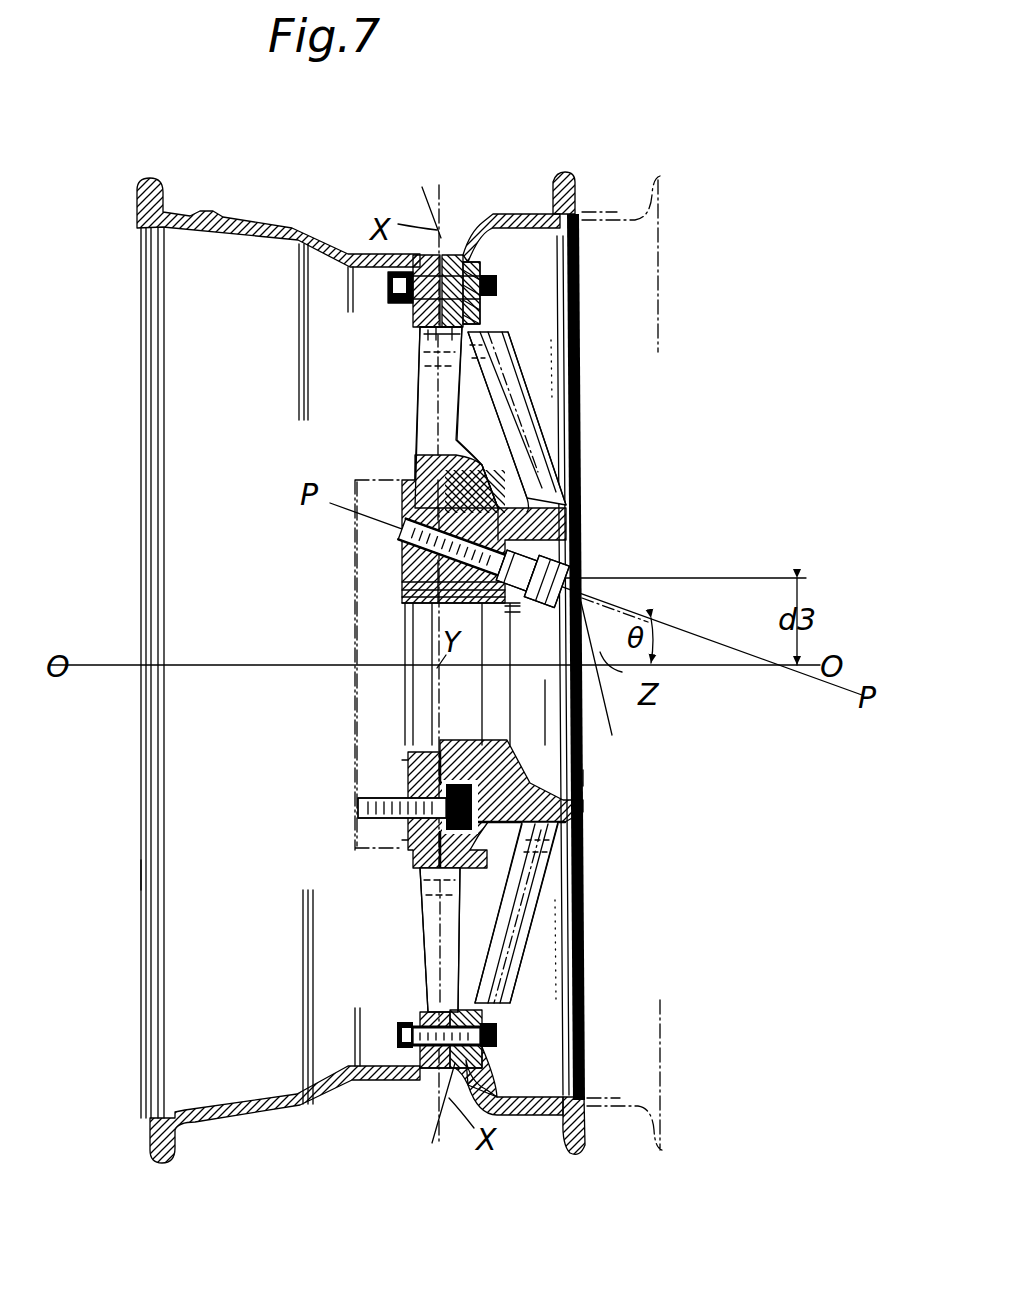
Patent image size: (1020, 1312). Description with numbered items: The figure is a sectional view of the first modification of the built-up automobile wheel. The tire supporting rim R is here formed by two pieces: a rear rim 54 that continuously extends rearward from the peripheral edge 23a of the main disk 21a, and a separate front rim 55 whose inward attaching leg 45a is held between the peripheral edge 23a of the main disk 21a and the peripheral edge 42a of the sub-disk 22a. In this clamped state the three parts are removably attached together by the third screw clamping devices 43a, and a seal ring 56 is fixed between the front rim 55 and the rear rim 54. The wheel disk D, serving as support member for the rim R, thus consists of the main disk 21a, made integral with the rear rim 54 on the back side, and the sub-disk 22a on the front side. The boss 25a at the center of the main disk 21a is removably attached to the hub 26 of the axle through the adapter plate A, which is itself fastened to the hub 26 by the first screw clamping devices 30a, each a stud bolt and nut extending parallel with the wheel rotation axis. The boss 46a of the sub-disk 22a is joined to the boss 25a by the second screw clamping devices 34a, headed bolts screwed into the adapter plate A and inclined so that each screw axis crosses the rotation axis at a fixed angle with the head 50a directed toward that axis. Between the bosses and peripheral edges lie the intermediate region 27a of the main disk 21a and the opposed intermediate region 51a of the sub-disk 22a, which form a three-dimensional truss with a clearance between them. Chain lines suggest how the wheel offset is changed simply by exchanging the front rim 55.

The rear rim 54 is at (282, 1106).
The front rim 55 is at (505, 214).
The seal ring 56 is at (440, 1080).
The main disk 21a is at (418, 397).
The sub-disk 22a is at (566, 870).
The peripheral edge of the main disk 23a is at (427, 307).
The boss of the main disk 25a is at (426, 862).
The hub 26 is at (355, 596).
The intermediate region of the main disk 27a is at (423, 955).
The first screw clamping device 30a is at (358, 806).
The second screw clamping device 34a is at (482, 606).
The peripheral edge of the sub-disk 42a is at (482, 286).
The third screw clamping device 43a is at (494, 1032).
The inward attaching leg of the front rim 45a is at (482, 304).
The boss of the sub-disk 46a is at (548, 518).
The head of the second screw clamping device 50a is at (572, 562).
The intermediate region of the sub-disk 51a is at (540, 425).
The adapter plate A is at (440, 762).
The wheel disk D is at (590, 778).
The tire supporting rim R is at (150, 876).